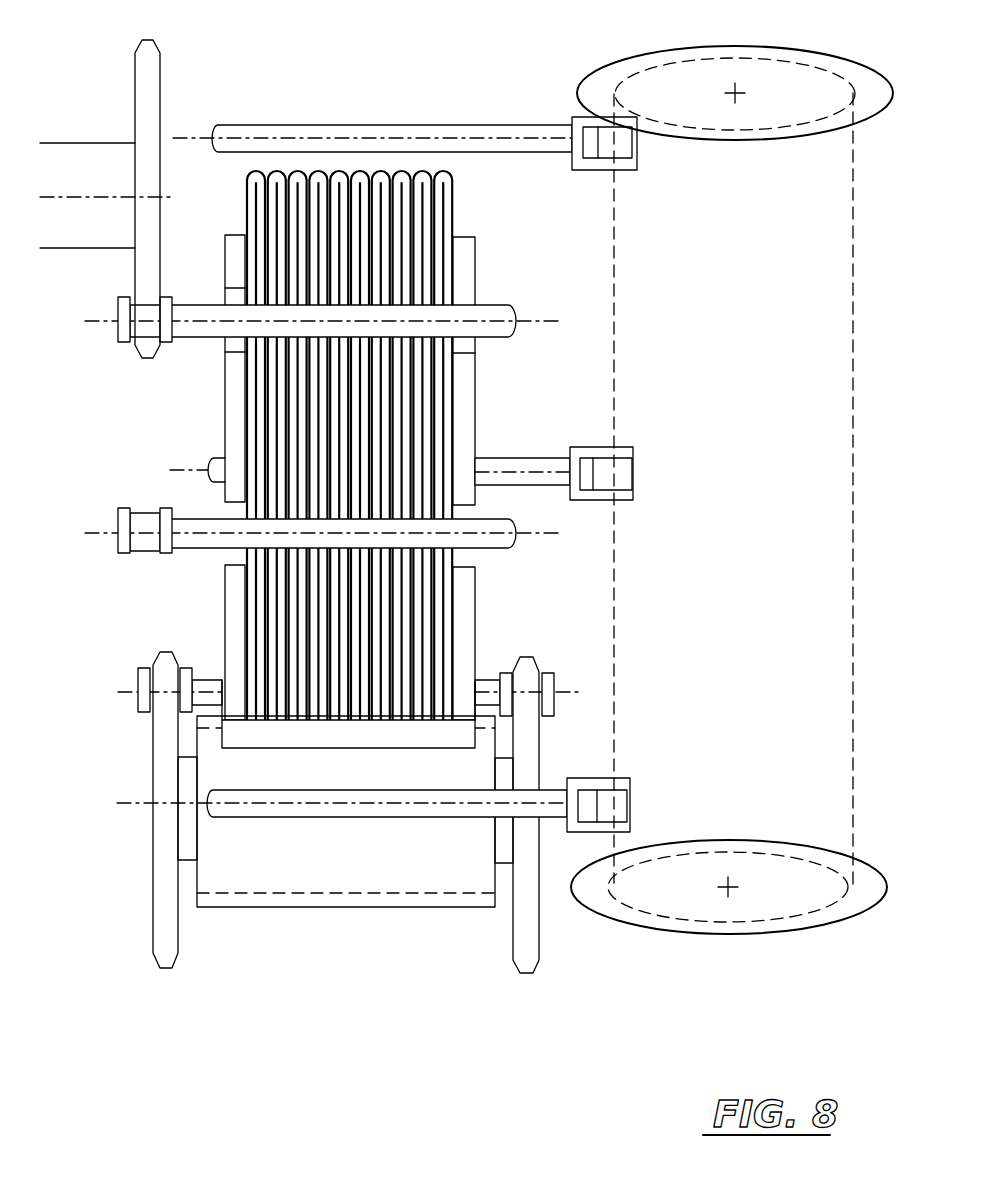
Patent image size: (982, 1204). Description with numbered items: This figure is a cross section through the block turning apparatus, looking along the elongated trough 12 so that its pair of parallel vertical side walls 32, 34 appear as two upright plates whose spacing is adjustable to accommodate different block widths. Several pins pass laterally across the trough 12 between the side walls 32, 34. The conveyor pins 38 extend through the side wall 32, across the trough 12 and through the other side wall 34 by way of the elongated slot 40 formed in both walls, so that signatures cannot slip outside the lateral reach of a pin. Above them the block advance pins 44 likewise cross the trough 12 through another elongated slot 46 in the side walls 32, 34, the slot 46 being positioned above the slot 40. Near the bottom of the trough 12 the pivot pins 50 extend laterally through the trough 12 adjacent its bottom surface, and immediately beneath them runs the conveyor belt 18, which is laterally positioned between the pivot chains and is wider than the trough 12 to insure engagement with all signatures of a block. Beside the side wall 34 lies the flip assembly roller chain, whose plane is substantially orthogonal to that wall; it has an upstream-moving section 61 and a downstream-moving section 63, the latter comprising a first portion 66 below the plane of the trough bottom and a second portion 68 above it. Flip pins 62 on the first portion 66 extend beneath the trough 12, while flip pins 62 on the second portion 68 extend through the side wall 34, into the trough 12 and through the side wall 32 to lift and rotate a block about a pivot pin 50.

The elongated trough 12 is at (478, 432).
The conveyor belt 18 is at (377, 907).
The side wall 32 is at (230, 645).
The side wall 34 is at (462, 635).
The conveyor pins 38 is at (490, 519).
The elongated slot 40 is at (235, 557).
The block advance pins 44 is at (500, 316).
The elongated slot 46 is at (232, 298).
The pivot pins 50 is at (488, 680).
The upstream-moving section 61 is at (850, 517).
The flip pins 62 is at (405, 135).
The downstream-moving section 63 is at (615, 408).
The first portion 66 is at (614, 750).
The second portion 68 is at (615, 306).